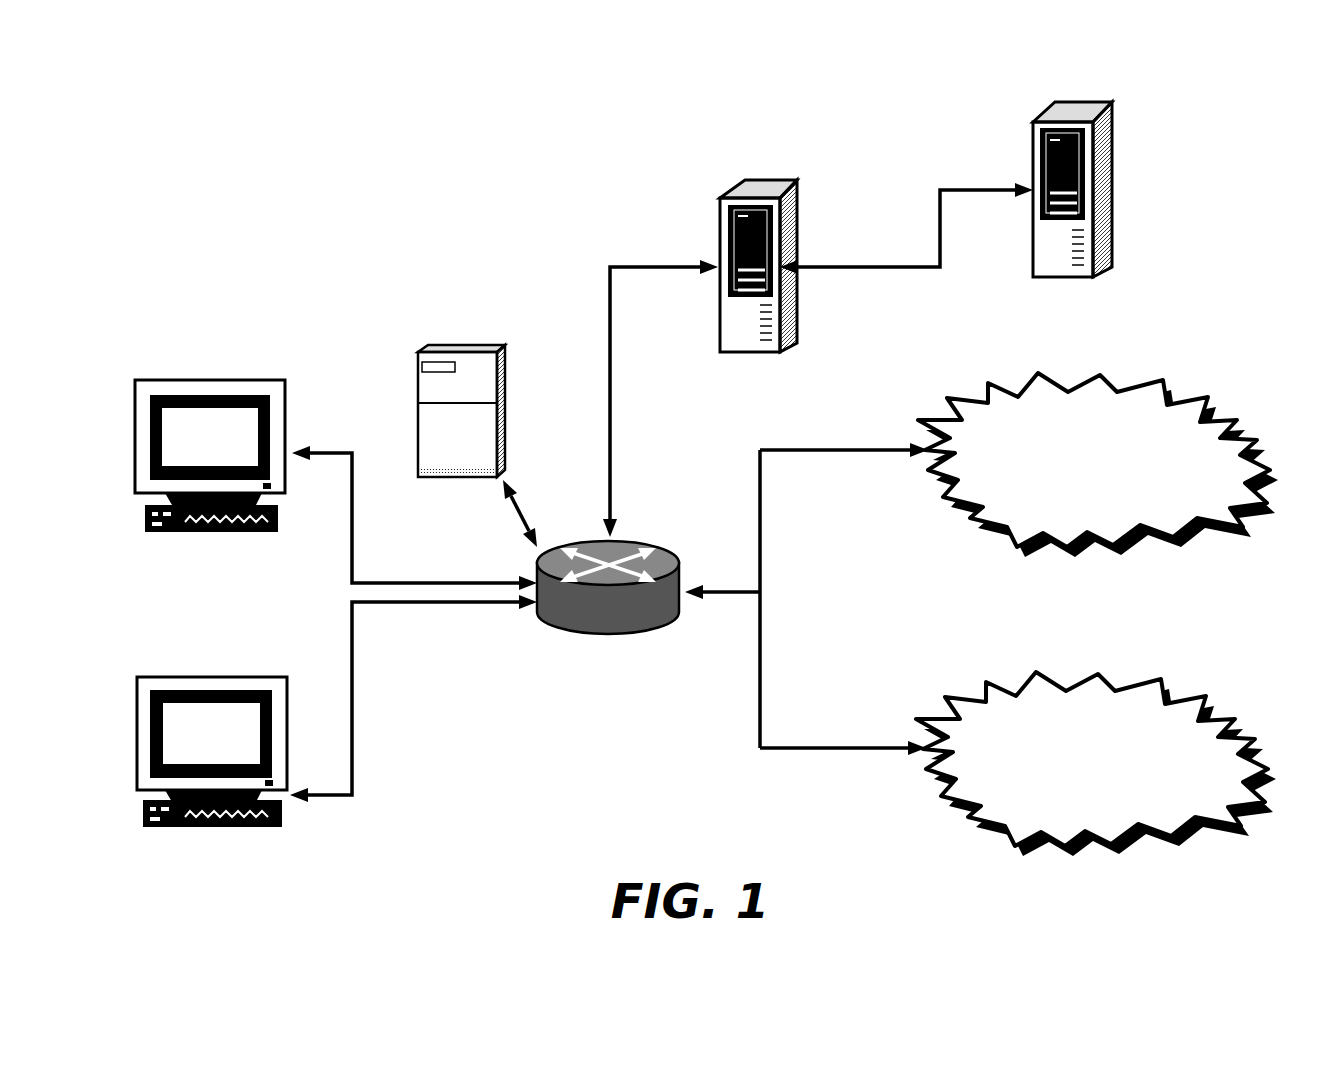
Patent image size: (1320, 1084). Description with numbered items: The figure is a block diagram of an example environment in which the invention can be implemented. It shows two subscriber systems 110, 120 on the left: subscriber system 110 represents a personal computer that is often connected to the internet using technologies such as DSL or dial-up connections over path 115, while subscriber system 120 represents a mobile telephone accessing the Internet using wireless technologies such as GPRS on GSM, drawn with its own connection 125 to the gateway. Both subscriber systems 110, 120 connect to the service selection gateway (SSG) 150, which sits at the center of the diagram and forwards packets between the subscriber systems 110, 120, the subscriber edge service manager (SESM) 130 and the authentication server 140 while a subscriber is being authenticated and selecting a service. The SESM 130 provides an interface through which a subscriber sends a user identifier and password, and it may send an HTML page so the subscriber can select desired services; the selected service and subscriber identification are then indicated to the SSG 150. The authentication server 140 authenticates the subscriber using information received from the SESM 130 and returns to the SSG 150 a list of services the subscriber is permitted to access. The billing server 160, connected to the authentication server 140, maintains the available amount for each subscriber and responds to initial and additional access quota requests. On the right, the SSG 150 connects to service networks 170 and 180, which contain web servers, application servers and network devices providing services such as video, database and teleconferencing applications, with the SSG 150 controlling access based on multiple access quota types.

The subscriber system 110 is at (238, 380).
The path 115 is at (330, 447).
The subscriber system 120 is at (250, 673).
The link between subscriber system and SSG 125 is at (353, 697).
The subscriber edge service manager (SESM) 130 is at (443, 342).
The authentication server 140 is at (722, 192).
The service selection gateway (SSG) 150 is at (678, 550).
The billing server 160 is at (1082, 102).
The service network 170 is at (1197, 393).
The service network 180 is at (1202, 691).